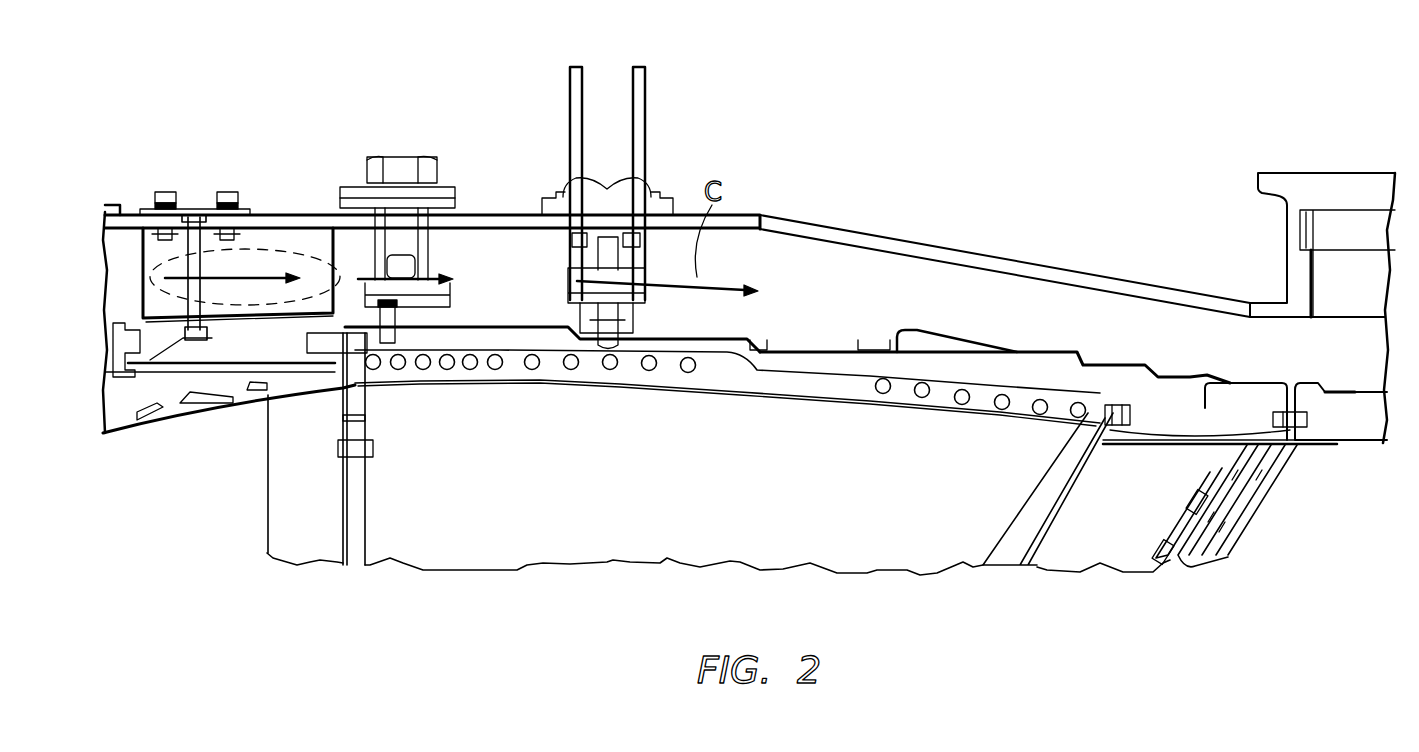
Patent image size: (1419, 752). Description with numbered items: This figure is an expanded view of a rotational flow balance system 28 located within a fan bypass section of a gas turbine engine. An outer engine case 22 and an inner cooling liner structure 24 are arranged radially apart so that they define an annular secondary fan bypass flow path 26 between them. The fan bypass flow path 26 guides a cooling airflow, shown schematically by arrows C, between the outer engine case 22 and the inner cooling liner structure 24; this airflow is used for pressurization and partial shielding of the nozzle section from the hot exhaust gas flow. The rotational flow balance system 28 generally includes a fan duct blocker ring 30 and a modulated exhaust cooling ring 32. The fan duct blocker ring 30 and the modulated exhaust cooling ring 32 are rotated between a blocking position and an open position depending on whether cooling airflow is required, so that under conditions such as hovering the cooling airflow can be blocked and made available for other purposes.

The outer engine case 22 is at (855, 232).
The inner cooling liner structure 24 is at (972, 392).
The fan bypass flow path 26 is at (530, 281).
The rotational flow balance system 28 is at (878, 91).
The fan duct blocker ring 30 is at (200, 260).
The modulated exhaust cooling ring 32 is at (866, 348).